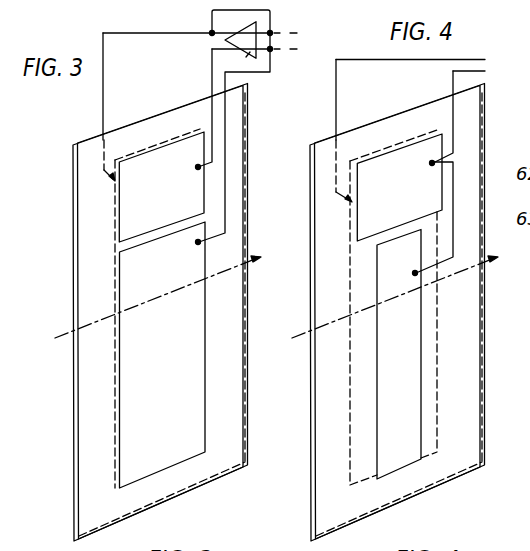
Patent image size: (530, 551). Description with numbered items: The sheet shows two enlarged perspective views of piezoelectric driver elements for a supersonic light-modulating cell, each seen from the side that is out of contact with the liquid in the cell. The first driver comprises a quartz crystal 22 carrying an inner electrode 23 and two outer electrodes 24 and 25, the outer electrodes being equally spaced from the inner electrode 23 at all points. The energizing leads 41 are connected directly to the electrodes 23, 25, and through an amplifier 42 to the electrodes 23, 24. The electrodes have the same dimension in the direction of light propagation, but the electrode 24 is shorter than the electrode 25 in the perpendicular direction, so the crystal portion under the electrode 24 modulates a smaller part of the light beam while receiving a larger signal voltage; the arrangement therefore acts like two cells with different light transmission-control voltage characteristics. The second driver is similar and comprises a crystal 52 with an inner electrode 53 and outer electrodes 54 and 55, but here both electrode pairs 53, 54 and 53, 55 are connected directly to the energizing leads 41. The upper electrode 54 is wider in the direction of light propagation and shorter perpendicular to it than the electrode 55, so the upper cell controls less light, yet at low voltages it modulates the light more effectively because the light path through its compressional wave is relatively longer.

In FIG. 3, the quartz crystal 22 is at (82, 177).
In FIG. 3, the inner electrode 23 is at (115, 219).
In FIG. 3, the outer electrode 24 is at (176, 147).
In FIG. 3, the outer electrode 25 is at (192, 343).
In FIG. 3, the energizing leads 41 is at (284, 52).
In FIG. 4, the energizing leads 41 is at (470, 70).
In FIG. 3, the amplifier 42 is at (246, 32).
In FIG. 4, the crystal 52 is at (320, 173).
In FIG. 4, the inner electrode 53 is at (350, 210).
In FIG. 4, the upper electrode 54 is at (416, 148).
In FIG. 4, the electrode 55 is at (410, 343).